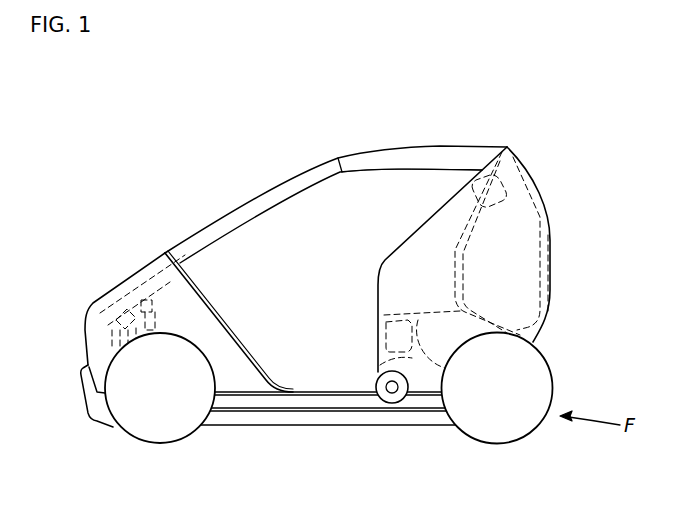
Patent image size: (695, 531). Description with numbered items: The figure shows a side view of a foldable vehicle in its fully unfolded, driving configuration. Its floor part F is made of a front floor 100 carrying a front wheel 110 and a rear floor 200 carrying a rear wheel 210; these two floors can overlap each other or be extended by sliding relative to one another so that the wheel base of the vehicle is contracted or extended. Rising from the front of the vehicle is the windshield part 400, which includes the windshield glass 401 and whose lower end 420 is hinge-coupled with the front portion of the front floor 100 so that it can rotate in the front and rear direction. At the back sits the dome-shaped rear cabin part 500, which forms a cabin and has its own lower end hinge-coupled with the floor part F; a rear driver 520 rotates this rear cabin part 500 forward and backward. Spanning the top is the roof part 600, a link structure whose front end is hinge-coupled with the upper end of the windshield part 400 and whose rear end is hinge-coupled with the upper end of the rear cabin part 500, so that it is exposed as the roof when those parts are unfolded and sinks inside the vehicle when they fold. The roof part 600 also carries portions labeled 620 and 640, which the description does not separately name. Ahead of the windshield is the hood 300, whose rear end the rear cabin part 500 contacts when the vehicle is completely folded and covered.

The front floor 100 is at (255, 400).
The front wheel 110 is at (157, 426).
The rear floor 200 is at (415, 417).
The rear wheel 210 is at (495, 432).
The hood 300 is at (158, 276).
The windshield part 400 is at (247, 207).
The windshield glass 401 is at (175, 300).
The lower end 420 is at (113, 315).
The rear cabin part 500 is at (517, 213).
The rear driver 520 is at (387, 397).
The roof part 600 is at (432, 156).
The roof seam / hinge 620 is at (338, 158).
The rear roof corner 640 is at (508, 144).